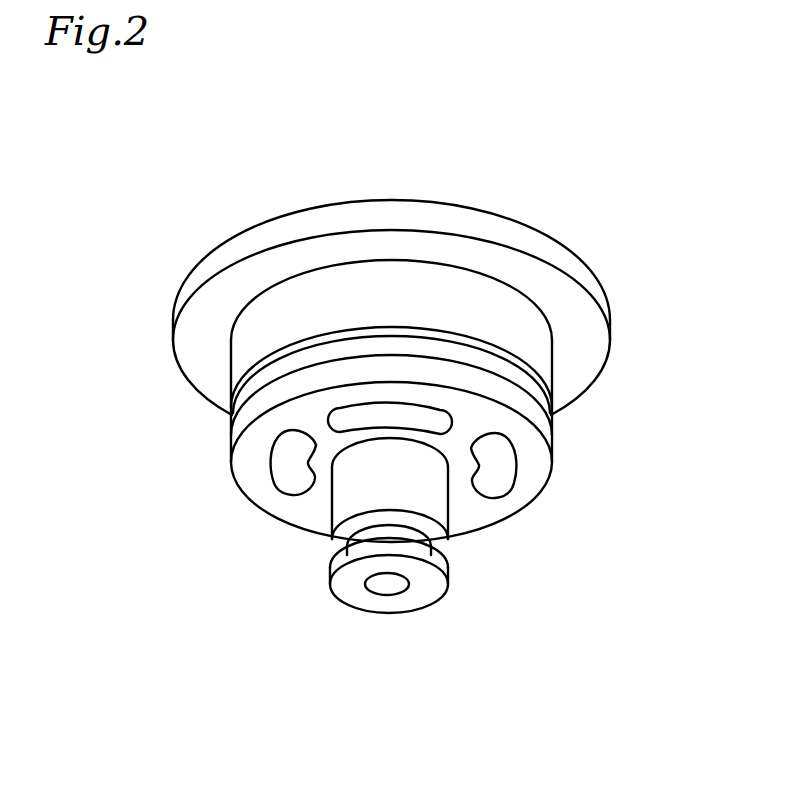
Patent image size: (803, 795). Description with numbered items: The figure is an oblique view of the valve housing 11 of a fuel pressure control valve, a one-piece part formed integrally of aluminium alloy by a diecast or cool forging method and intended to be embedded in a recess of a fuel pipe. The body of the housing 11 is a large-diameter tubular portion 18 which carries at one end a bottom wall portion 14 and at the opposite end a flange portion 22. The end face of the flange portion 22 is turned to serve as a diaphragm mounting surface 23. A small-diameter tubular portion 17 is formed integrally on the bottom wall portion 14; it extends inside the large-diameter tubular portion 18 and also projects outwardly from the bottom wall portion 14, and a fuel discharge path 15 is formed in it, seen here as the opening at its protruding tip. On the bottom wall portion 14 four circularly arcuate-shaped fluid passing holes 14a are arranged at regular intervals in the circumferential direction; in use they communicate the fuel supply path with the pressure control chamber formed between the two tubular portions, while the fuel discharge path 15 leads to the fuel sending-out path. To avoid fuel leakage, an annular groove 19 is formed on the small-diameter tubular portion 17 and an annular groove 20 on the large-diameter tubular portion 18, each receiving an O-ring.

The valve housing 11 is at (596, 252).
The bottom wall portion 14 is at (257, 482).
The fluid passing holes 14a is at (287, 462).
The fuel discharge path 15 is at (400, 588).
The small-diameter tubular portion 17 is at (332, 503).
The large-diameter tubular portion 18 is at (541, 359).
The annular groove 19 is at (436, 546).
The annular groove 20 is at (480, 357).
The flange portion 22 is at (485, 229).
The diaphragm mounting surface 23 is at (278, 217).